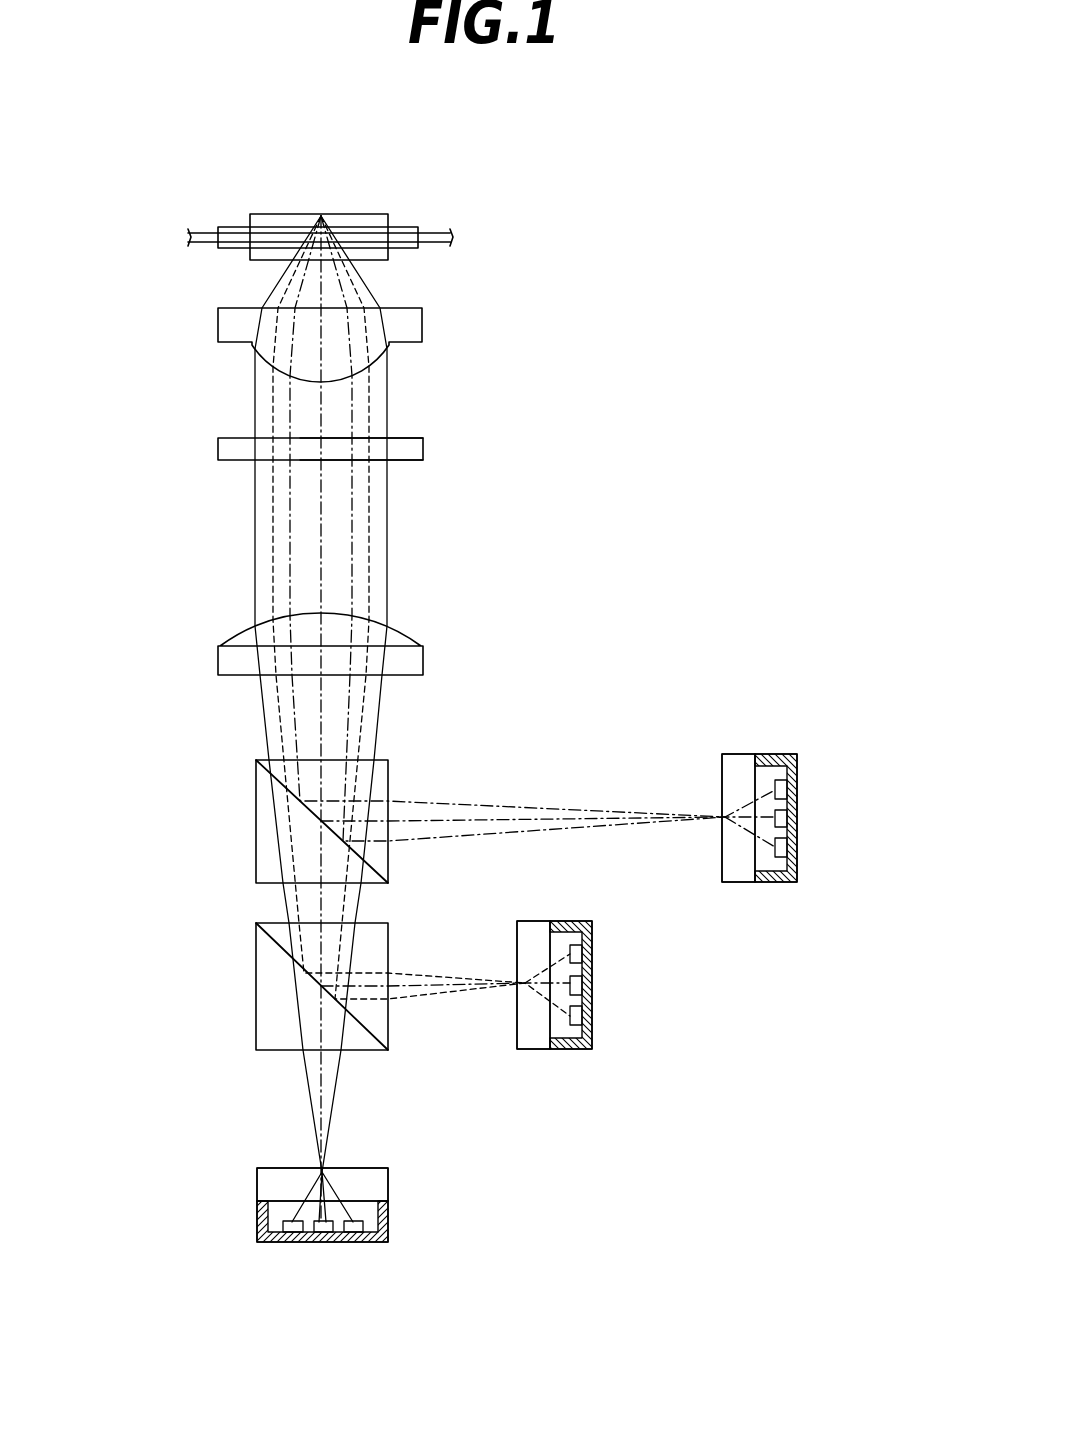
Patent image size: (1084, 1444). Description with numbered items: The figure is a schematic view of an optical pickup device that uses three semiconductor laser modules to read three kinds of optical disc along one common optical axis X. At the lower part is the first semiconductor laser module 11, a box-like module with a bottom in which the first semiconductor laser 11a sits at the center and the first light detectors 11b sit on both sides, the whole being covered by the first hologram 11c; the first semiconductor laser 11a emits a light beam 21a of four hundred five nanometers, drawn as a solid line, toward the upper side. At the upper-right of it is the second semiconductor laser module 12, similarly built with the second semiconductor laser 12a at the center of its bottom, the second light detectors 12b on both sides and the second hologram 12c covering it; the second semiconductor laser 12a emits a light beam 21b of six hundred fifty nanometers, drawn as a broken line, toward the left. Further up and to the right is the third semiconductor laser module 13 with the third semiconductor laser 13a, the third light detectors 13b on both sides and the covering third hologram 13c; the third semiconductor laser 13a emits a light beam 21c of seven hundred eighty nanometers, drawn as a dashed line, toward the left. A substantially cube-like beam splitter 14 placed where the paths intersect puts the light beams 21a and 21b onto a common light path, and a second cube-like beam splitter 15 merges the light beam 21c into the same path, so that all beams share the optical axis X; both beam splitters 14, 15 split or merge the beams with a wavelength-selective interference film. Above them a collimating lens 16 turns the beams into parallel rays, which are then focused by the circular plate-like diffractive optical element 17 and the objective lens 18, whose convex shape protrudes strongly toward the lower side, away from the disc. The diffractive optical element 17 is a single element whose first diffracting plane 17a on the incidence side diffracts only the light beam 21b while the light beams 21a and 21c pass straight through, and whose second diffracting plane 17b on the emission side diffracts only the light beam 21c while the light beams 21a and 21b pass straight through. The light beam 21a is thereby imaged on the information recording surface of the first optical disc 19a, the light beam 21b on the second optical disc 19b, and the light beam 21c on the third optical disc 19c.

The first semiconductor laser module 11 is at (240, 1207).
The first semiconductor laser 11a is at (323, 1237).
The first light detectors 11b is at (289, 1237).
The first hologram 11c is at (377, 1184).
The second semiconductor laser module 12 is at (576, 1066).
The second semiconductor laser 12a is at (578, 985).
The second light detectors 12b is at (577, 955).
The second hologram 12c is at (532, 1042).
The third semiconductor laser module 13 is at (737, 740).
The third semiconductor laser 13a is at (785, 817).
The third light detectors 13b is at (782, 790).
The third hologram 13c is at (740, 875).
The beam splitter 14 is at (256, 1018).
The beam splitter 15 is at (256, 862).
The collimating lens 16 is at (220, 658).
The diffractive optical element 17 is at (218, 449).
The first diffracting plane 17a is at (407, 461).
The second diffracting plane 17b is at (412, 437).
The objective lens 18 is at (218, 323).
The first optical disc 19a is at (452, 235).
The second optical disc 19b is at (403, 223).
The third optical disc 19c is at (343, 213).
The light beam 21a is at (333, 1109).
The light beam 21b is at (437, 994).
The light beam 21c is at (513, 832).
The optical axis X is at (322, 557).